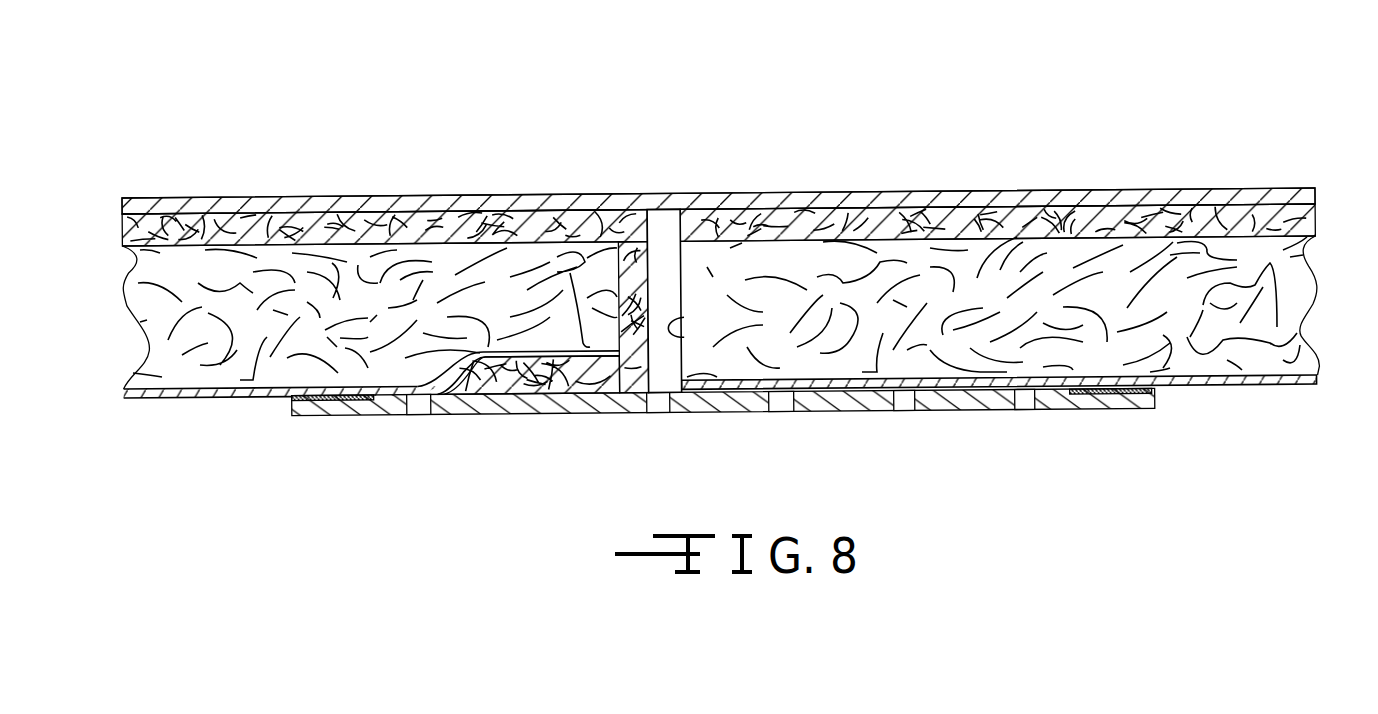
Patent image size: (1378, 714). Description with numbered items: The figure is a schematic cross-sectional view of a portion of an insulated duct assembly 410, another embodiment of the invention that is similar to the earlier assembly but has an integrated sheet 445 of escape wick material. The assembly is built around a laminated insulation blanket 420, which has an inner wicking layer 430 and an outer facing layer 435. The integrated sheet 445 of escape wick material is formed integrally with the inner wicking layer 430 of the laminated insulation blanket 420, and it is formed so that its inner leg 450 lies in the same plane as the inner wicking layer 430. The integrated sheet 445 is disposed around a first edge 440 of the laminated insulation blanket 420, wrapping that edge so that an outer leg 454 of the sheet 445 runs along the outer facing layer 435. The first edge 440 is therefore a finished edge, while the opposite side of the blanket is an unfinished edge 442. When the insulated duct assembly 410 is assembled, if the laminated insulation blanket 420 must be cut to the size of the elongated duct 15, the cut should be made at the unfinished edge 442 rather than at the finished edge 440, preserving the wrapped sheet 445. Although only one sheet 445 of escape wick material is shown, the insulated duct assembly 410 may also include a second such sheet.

The insulated duct assembly 410 is at (1010, 105).
The elongated duct 15 is at (1316, 193).
The inner leg 450 is at (565, 218).
The inner wicking layer 430 is at (287, 217).
The laminated insulation blanket 420 is at (127, 410).
The outer facing layer 435 is at (466, 384).
The outer leg 454 is at (511, 402).
The integrated sheet of escape wick material 445 is at (656, 360).
The first edge 440 is at (652, 308).
The unfinished edge 442 is at (683, 323).